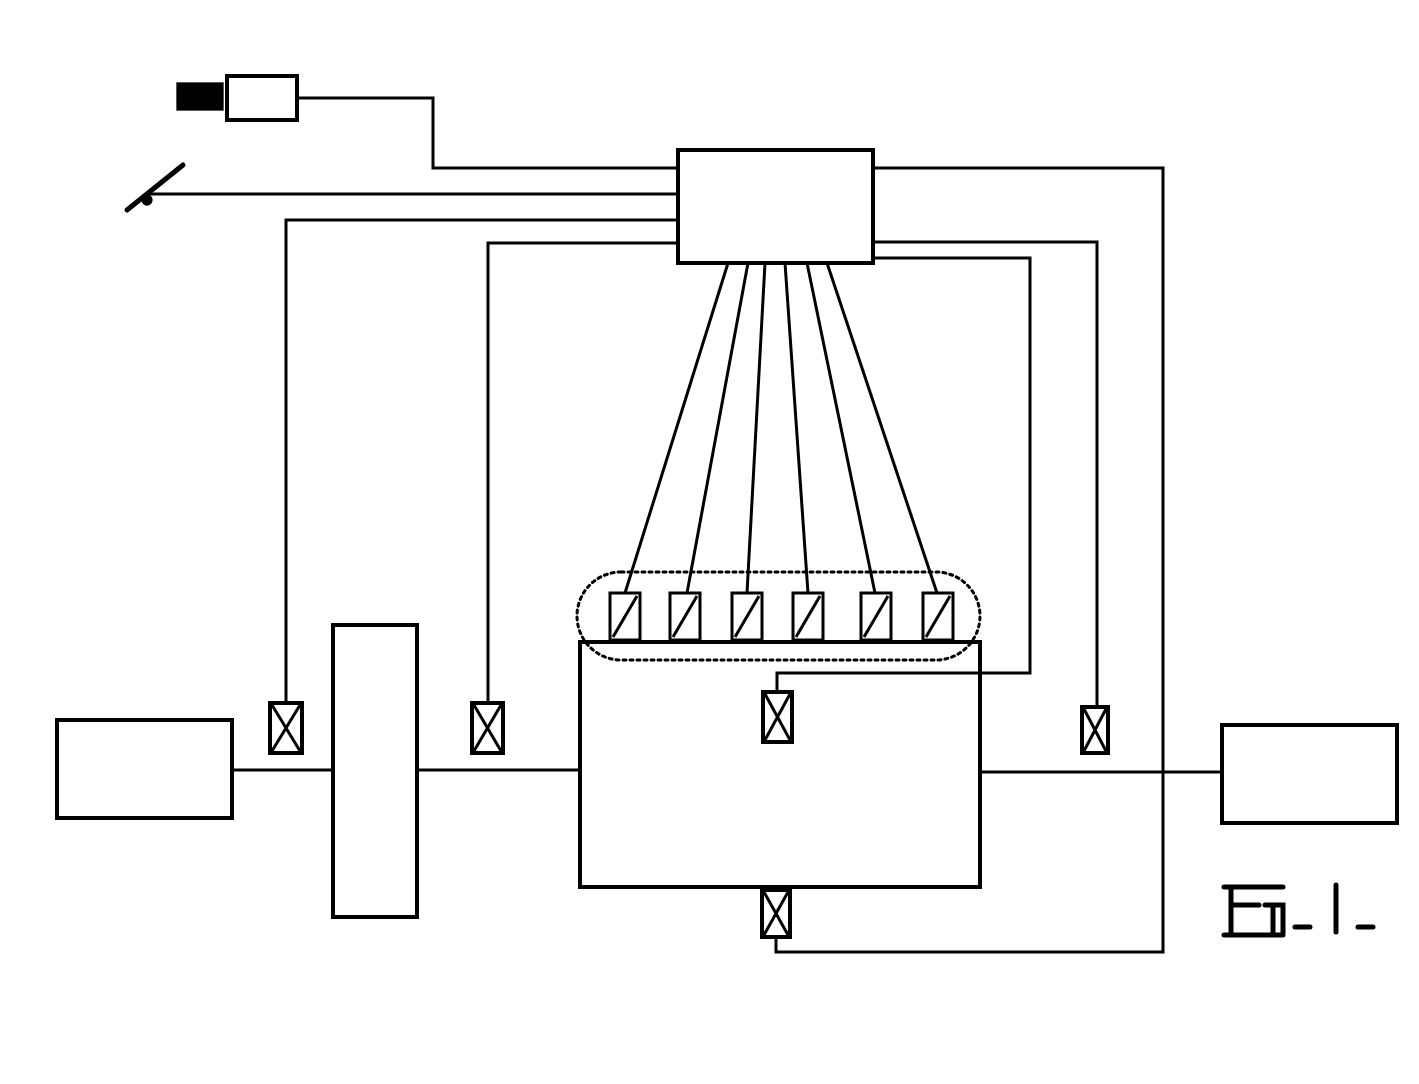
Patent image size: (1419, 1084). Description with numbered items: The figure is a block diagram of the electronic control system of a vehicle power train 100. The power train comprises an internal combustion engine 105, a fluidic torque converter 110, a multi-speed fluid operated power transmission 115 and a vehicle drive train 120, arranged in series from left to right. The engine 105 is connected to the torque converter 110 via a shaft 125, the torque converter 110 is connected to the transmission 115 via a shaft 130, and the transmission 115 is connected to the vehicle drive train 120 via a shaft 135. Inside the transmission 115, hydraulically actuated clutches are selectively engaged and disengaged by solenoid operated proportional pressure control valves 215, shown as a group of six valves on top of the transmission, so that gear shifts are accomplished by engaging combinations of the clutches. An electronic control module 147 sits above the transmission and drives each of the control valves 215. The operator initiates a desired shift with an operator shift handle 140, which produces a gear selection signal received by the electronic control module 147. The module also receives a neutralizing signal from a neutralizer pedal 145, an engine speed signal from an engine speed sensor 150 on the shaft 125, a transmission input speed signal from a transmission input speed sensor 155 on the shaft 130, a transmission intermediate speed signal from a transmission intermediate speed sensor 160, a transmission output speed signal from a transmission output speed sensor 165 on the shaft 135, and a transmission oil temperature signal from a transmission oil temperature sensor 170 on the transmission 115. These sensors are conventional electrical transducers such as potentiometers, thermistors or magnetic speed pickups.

The power train 100 is at (1327, 288).
The internal combustion engine 105 is at (120, 717).
The fluidic torque converter 110 is at (377, 623).
The multi-speed fluid operated power transmission 115 is at (640, 887).
The vehicle drive train 120 is at (1295, 723).
The shaft 125 is at (283, 773).
The shaft 130 is at (523, 773).
The shaft 135 is at (1113, 775).
The operator shift handle 140 is at (263, 120).
The neutralizer pedal 145 is at (168, 168).
The electronic control module 147 is at (812, 150).
The engine speed sensor 150 is at (278, 700).
The transmission input speed sensor 155 is at (537, 692).
The transmission intermediate speed sensor 160 is at (792, 718).
The transmission output speed sensor 165 is at (1080, 708).
The transmission oil temperature sensor 170 is at (790, 925).
The solenoid operated proportional pressure control valves 215 is at (960, 576).